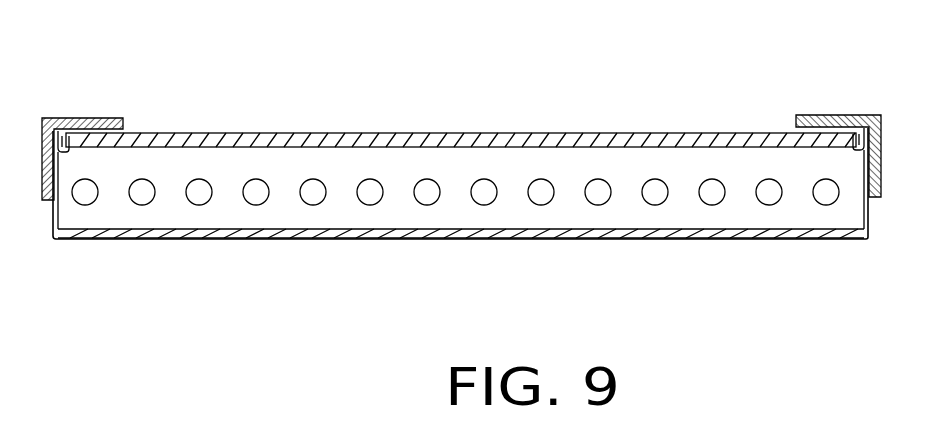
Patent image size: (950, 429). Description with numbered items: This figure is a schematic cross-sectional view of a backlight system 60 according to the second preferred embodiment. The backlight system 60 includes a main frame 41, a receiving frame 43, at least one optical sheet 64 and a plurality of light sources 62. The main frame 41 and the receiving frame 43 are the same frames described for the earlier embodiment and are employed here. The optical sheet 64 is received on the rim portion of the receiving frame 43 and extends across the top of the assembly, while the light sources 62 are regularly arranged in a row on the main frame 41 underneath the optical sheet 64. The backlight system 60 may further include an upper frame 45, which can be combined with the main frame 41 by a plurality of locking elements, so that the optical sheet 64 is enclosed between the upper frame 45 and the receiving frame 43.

The backlight system 60 is at (481, 54).
The main frame 41 is at (424, 237).
The receiving frame 43 is at (837, 115).
The upper frame 45 is at (74, 118).
The light sources 62 is at (197, 192).
The optical sheet 64 is at (313, 140).